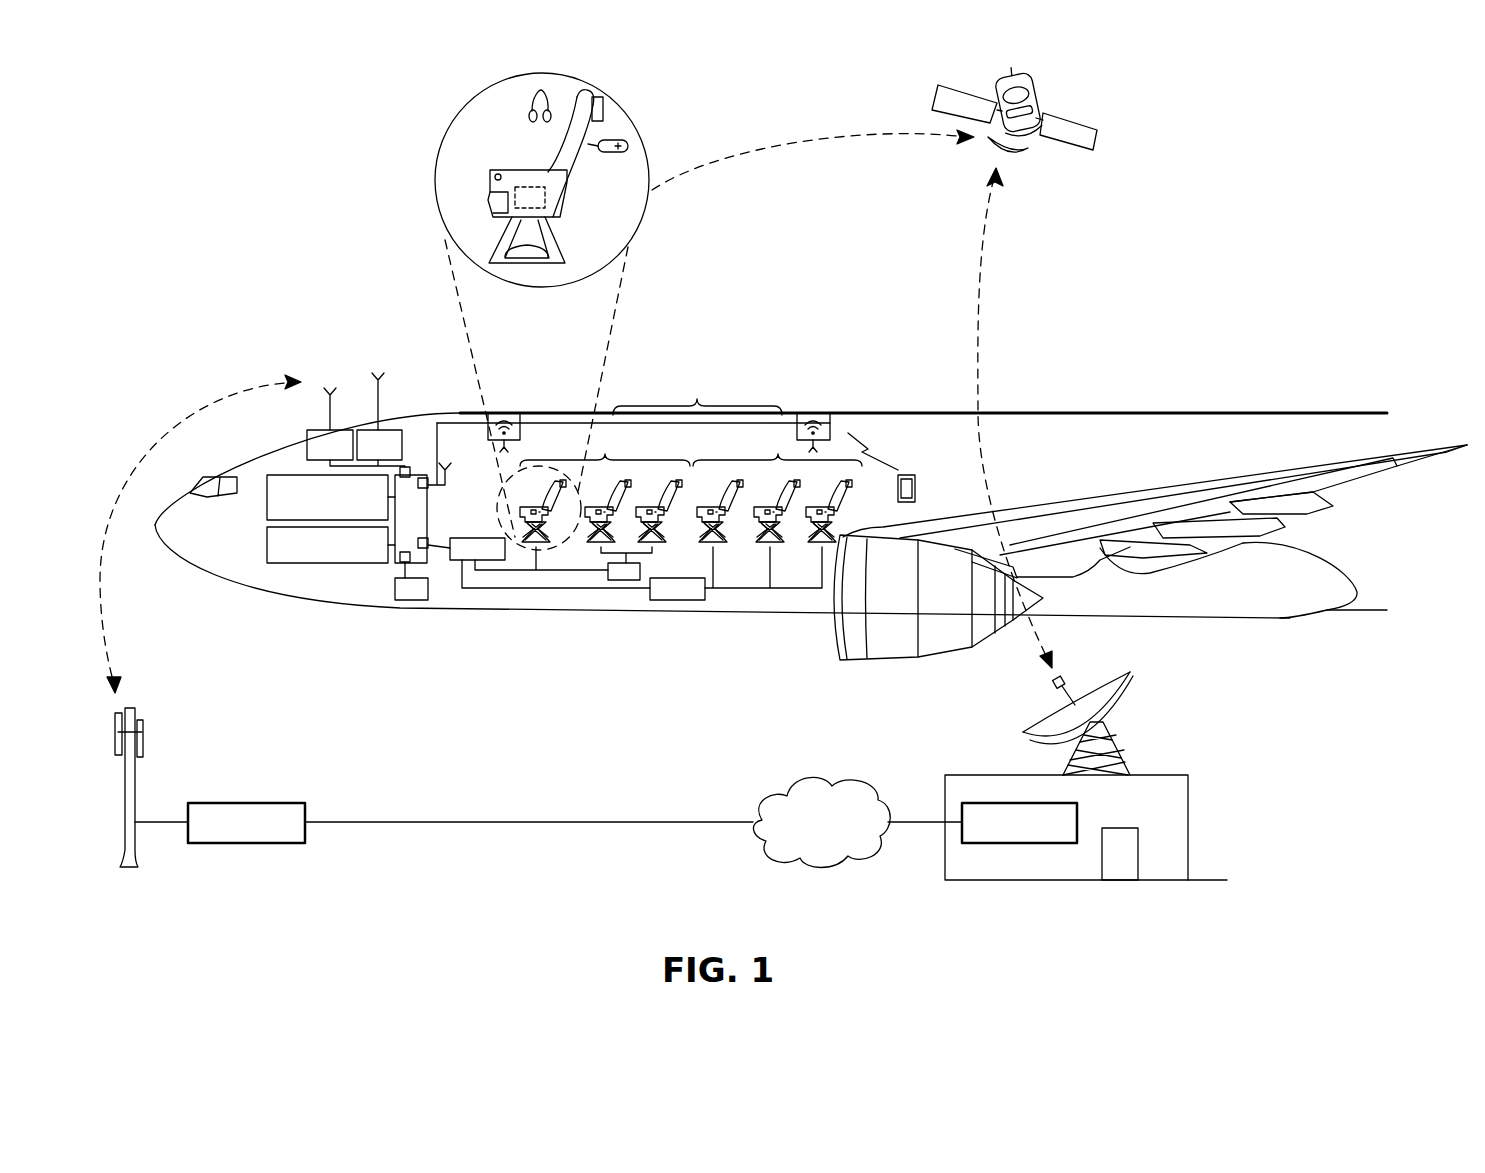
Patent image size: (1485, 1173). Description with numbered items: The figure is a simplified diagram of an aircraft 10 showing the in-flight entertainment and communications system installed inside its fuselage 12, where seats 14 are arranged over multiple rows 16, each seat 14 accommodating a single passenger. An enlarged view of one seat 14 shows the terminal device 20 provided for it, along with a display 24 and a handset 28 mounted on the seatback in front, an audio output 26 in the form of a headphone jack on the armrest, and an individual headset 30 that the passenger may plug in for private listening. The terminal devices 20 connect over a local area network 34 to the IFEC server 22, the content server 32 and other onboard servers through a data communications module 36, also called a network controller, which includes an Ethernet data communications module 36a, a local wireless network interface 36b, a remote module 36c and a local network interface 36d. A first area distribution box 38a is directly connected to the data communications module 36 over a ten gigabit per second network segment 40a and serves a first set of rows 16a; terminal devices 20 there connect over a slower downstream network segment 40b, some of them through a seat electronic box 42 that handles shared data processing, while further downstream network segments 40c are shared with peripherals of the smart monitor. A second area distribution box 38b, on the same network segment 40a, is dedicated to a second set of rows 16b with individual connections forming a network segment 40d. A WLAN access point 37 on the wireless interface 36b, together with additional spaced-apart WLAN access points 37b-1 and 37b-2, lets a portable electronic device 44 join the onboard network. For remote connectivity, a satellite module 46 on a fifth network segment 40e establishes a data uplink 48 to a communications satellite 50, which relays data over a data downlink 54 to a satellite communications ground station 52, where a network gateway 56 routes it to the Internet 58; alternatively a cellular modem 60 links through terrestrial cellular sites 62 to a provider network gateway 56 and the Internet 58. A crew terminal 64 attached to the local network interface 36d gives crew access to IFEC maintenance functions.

The aircraft 10 is at (1075, 479).
The fuselage 12 is at (1087, 412).
The seat 14 is at (558, 200).
The rows 16 is at (633, 401).
The first set of rows 16a is at (605, 486).
The second set of rows 16b is at (777, 486).
The terminal device 20 is at (509, 233).
The IFEC server 22 is at (267, 543).
The display 24 is at (603, 103).
The audio output 26 is at (496, 176).
The handset 28 is at (621, 153).
The headset 30 is at (528, 115).
The content server 32 is at (262, 476).
The local area network 34 is at (386, 576).
The data communications module 36 is at (430, 505).
The Ethernet data communications module 36a is at (428, 543).
The local wireless network interface 36b is at (423, 478).
The remote module 36c is at (406, 467).
The local network interface 36d is at (400, 560).
The WLAN access point 37 is at (448, 467).
The additional WLAN access point 37b-1 is at (508, 412).
The additional WLAN access point 37b-2 is at (812, 412).
The first area distribution box 38a is at (463, 563).
The second area distribution box 38b is at (677, 601).
The network segment 40a is at (441, 552).
The downstream network segment 40b is at (507, 572).
The further downstream network segment 40c is at (626, 538).
The network segment 40d is at (750, 589).
The fifth network segment 40e is at (328, 466).
The seat electronic box 42 is at (624, 581).
The portable electronic device 44 is at (905, 474).
The satellite module 46 is at (374, 417).
The data uplink 48 is at (792, 152).
The communications satellite 50 is at (1030, 150).
The satellite communications ground station 52 is at (1190, 823).
The data downlink 54 is at (978, 284).
The network gateway 56 is at (252, 848).
The Internet 58 is at (806, 778).
The cellular modem 60 is at (309, 428).
The terrestrial cellular site 62 is at (140, 862).
The crew terminal 64 is at (409, 601).